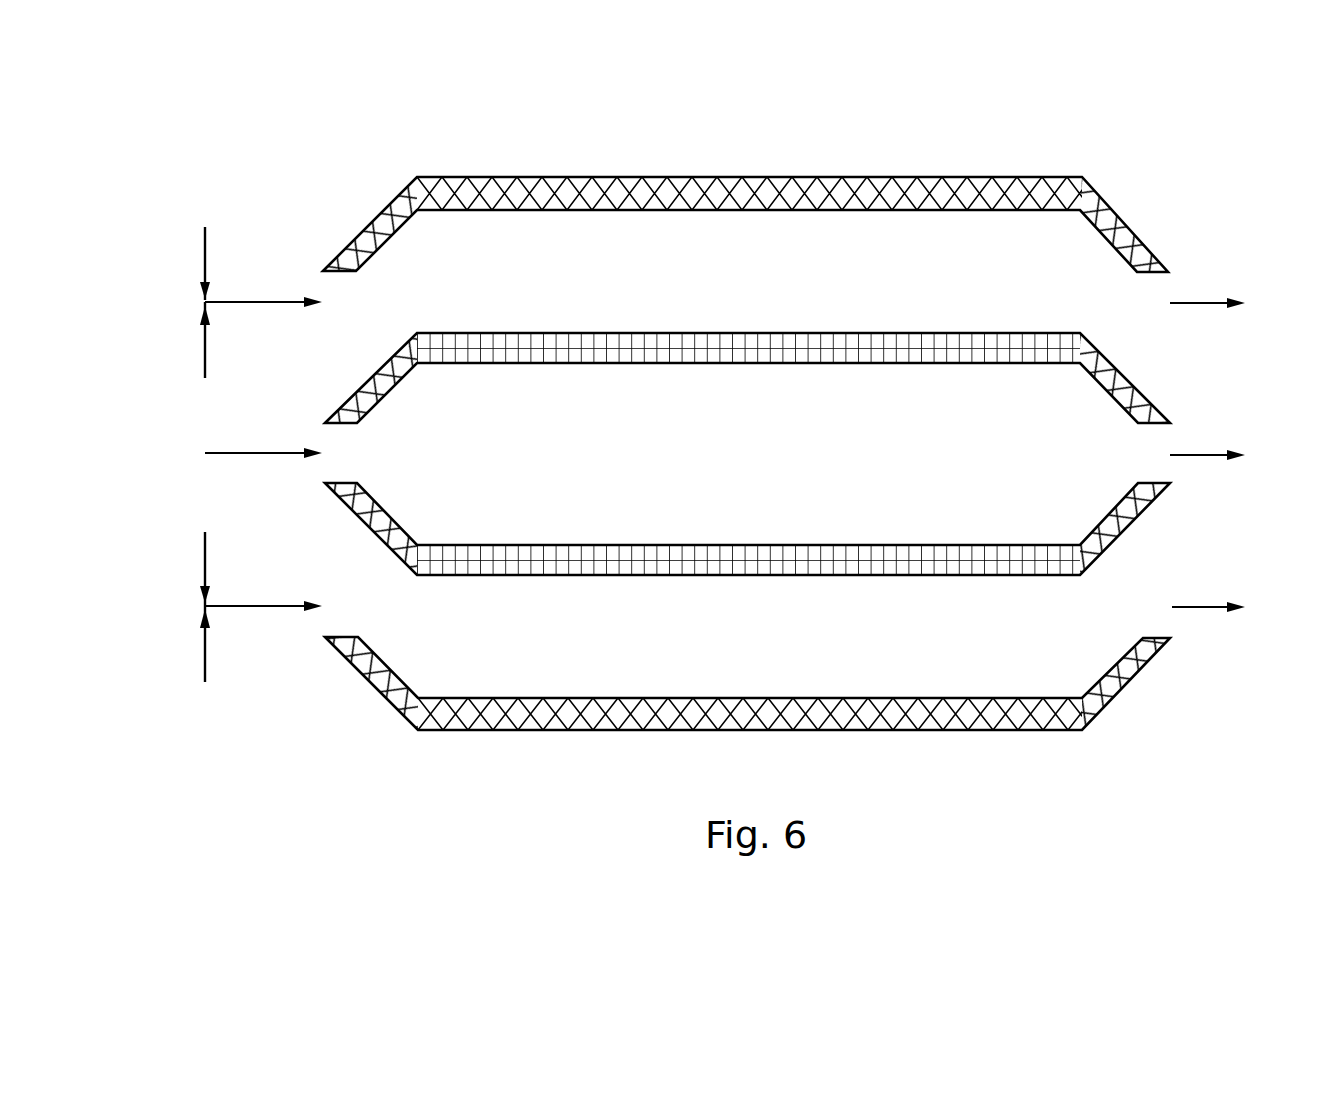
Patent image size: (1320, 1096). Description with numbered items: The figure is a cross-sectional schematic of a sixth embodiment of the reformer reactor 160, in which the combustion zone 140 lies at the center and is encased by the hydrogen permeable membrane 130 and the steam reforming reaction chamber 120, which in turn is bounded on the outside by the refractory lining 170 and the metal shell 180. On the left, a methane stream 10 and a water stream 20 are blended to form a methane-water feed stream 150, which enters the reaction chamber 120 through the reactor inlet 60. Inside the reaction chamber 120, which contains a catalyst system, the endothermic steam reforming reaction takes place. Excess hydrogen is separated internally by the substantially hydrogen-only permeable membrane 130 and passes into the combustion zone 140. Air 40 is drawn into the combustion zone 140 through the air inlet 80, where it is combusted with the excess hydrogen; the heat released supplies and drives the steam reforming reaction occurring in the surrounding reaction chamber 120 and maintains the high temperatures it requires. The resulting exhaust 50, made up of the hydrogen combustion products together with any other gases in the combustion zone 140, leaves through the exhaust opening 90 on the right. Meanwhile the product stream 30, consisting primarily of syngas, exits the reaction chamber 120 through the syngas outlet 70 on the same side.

The methane stream 10 is at (205, 252).
The water stream 20 is at (205, 355).
The product stream 30 is at (1207, 305).
The air 40 is at (266, 452).
The exhaust 50 is at (1207, 458).
The reactor inlet 60 is at (325, 287).
The syngas outlet 70 is at (1162, 288).
The air inlet 80 is at (325, 467).
The exhaust opening 90 is at (1162, 438).
The steam reforming reaction chamber 120 is at (730, 297).
The hydrogen permeable membrane 130 is at (978, 363).
The combustion zone 140 is at (730, 465).
The methane-water feed stream 150 is at (250, 305).
The reformer reactor 160 is at (897, 782).
The refractory lining 170 is at (784, 427).
The metal shell 180 is at (752, 178).